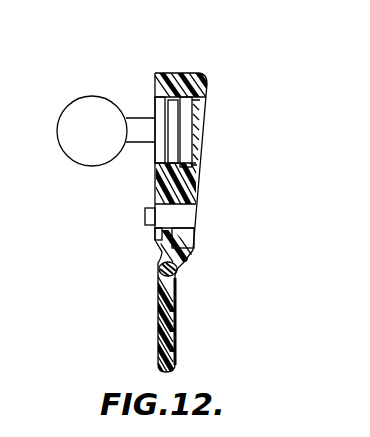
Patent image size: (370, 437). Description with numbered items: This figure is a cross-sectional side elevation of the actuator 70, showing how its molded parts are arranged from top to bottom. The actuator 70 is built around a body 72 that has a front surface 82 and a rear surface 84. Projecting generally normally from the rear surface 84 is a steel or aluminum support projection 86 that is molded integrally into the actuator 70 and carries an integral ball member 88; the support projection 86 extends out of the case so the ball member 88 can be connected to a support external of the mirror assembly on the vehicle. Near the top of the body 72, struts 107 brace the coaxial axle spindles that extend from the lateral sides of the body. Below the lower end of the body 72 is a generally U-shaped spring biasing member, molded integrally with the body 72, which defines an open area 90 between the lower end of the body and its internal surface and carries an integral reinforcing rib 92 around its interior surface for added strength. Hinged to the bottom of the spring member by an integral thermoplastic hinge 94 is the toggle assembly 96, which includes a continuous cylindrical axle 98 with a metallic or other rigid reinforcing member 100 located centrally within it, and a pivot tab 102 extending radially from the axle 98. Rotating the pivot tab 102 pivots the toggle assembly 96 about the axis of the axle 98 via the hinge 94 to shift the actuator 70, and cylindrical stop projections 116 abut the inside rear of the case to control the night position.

The actuator 70 is at (237, 81).
The body 72 is at (188, 72).
The front surface 82 is at (196, 184).
The rear surface 84 is at (155, 180).
The support projection 86 is at (139, 118).
The ball member 88 is at (90, 103).
The open area 90 is at (183, 216).
The reinforcing rib 92 is at (160, 239).
The thermoplastic hinge 94 is at (178, 261).
The toggle assembly 96 is at (155, 309).
The continuous cylindrical axle 98 is at (157, 262).
The reinforcing member 100 is at (178, 268).
The pivot tab 102 is at (177, 341).
The struts 107 is at (200, 108).
The cylindrical stop projections 116 is at (145, 213).